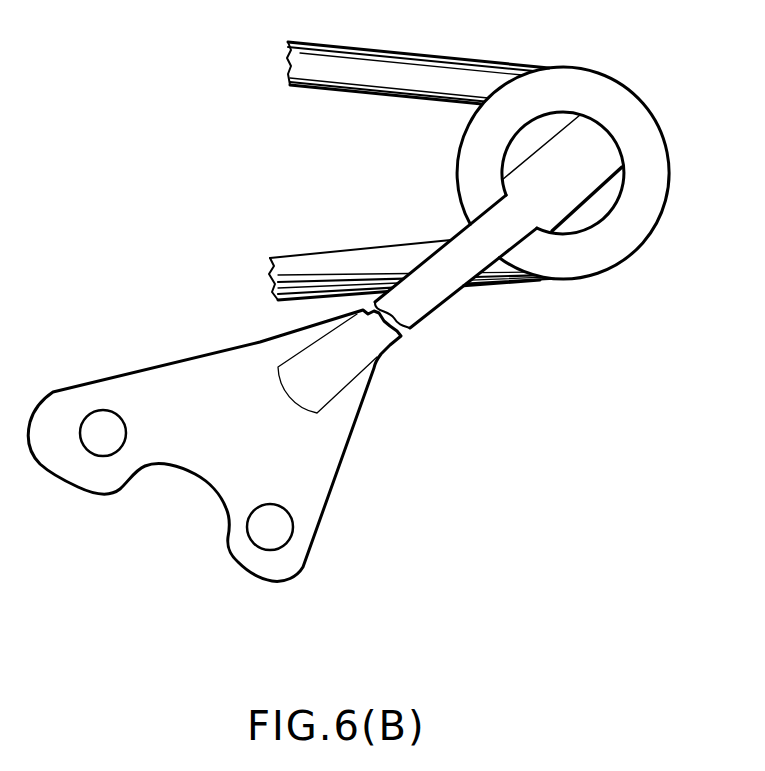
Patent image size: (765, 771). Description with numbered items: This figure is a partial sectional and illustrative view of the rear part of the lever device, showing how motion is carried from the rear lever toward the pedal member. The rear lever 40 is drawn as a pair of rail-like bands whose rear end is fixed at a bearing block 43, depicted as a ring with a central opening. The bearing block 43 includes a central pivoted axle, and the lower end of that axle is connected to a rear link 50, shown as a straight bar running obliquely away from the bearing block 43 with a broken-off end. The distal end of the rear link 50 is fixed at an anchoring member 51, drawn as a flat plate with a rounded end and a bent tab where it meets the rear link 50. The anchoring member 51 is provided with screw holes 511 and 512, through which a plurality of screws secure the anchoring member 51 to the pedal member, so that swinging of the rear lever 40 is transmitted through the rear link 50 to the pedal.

The rear lever 40 is at (398, 62).
The bearing block 43 is at (650, 155).
The rear link 50 is at (440, 295).
The anchoring member 51 is at (222, 473).
The screw hole 511 is at (95, 448).
The screw hole 512 is at (270, 537).